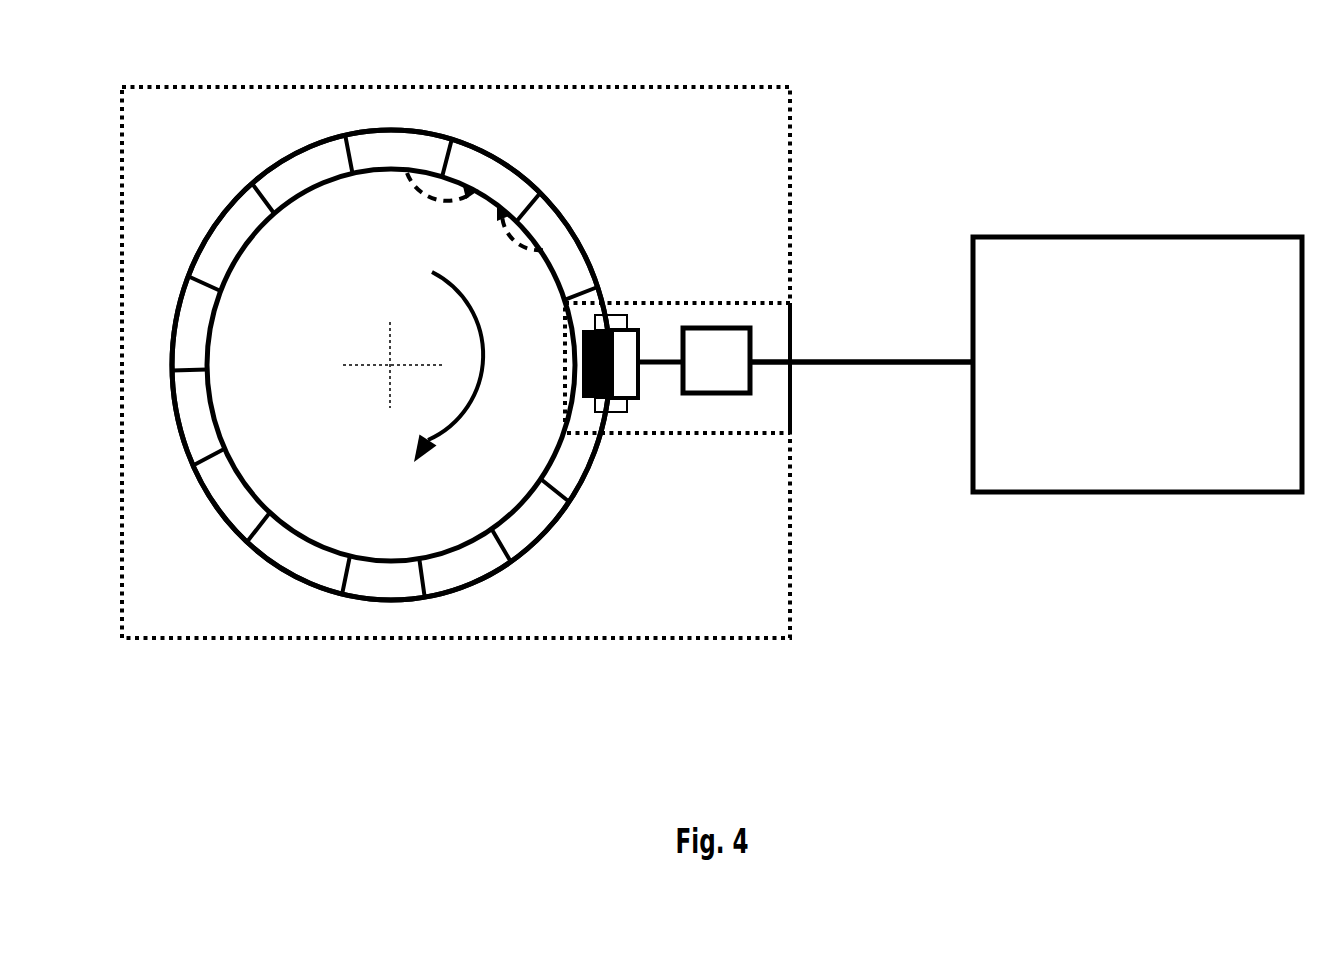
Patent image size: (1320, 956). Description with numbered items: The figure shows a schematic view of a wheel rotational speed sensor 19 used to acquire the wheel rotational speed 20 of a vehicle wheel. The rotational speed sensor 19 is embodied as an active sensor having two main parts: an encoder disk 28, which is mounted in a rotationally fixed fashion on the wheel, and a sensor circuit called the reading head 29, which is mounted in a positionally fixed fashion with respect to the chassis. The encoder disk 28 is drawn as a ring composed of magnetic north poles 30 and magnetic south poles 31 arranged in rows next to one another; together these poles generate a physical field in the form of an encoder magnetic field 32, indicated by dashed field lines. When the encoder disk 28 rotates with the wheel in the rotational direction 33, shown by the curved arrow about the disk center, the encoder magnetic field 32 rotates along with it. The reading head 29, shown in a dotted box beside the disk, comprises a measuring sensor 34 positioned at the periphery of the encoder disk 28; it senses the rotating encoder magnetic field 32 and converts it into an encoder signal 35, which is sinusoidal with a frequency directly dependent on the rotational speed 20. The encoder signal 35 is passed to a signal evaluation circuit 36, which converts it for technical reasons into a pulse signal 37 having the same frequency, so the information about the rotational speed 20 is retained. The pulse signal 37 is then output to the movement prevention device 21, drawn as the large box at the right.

The rotational speed sensor 19 is at (368, 86).
The wheel rotational speed 20 is at (904, 274).
The movement prevention device 21 is at (1115, 237).
The encoder disk 28 is at (199, 151).
The reading head 29 is at (715, 435).
The magnetic north pole 30 is at (396, 131).
The magnetic south pole 31 is at (292, 158).
The encoder magnetic field 32 is at (432, 198).
The rotational direction 33 is at (467, 290).
The measuring sensor 34 is at (630, 403).
The encoder signal 35 is at (654, 358).
The signal evaluation circuit 36 is at (712, 328).
The pulse signal 37 is at (862, 358).